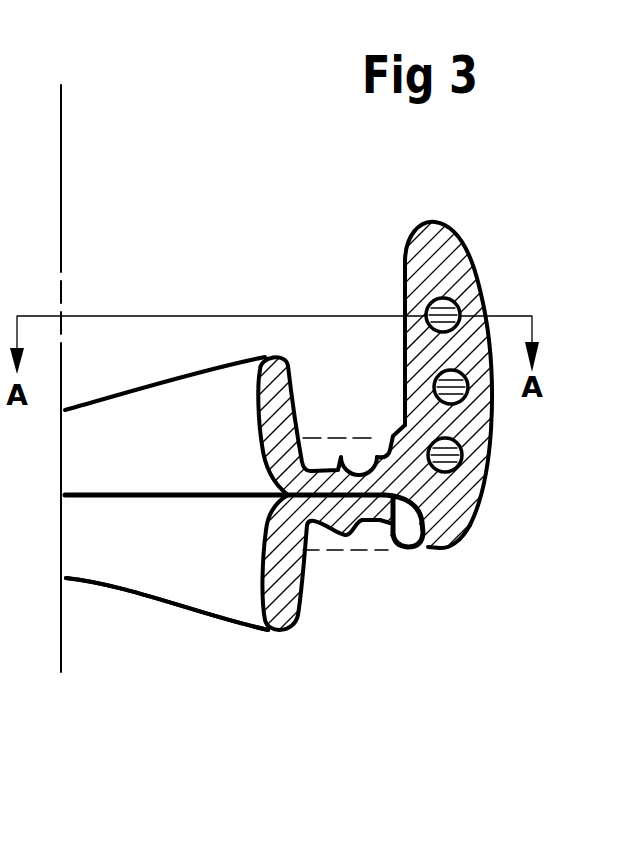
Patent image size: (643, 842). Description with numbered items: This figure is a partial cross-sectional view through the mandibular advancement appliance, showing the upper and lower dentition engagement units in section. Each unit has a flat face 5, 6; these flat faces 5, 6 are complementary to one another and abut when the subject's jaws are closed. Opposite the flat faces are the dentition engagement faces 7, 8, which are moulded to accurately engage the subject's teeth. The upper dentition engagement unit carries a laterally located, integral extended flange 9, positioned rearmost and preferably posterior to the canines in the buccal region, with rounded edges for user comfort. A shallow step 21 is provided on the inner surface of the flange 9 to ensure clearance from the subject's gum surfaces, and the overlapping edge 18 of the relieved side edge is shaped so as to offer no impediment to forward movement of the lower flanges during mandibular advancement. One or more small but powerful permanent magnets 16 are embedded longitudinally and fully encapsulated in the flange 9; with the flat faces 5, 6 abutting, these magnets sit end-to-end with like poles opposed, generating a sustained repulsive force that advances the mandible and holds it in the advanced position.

The flat face 5 is at (200, 493).
The flat face 6 is at (210, 500).
The dentition engagement face 7 is at (340, 455).
The dentition engagement face 8 is at (347, 540).
The flange 9 is at (470, 432).
The permanent magnet 16 is at (452, 300).
The overlapping edge 18 is at (467, 530).
The shallow step 21 is at (398, 420).